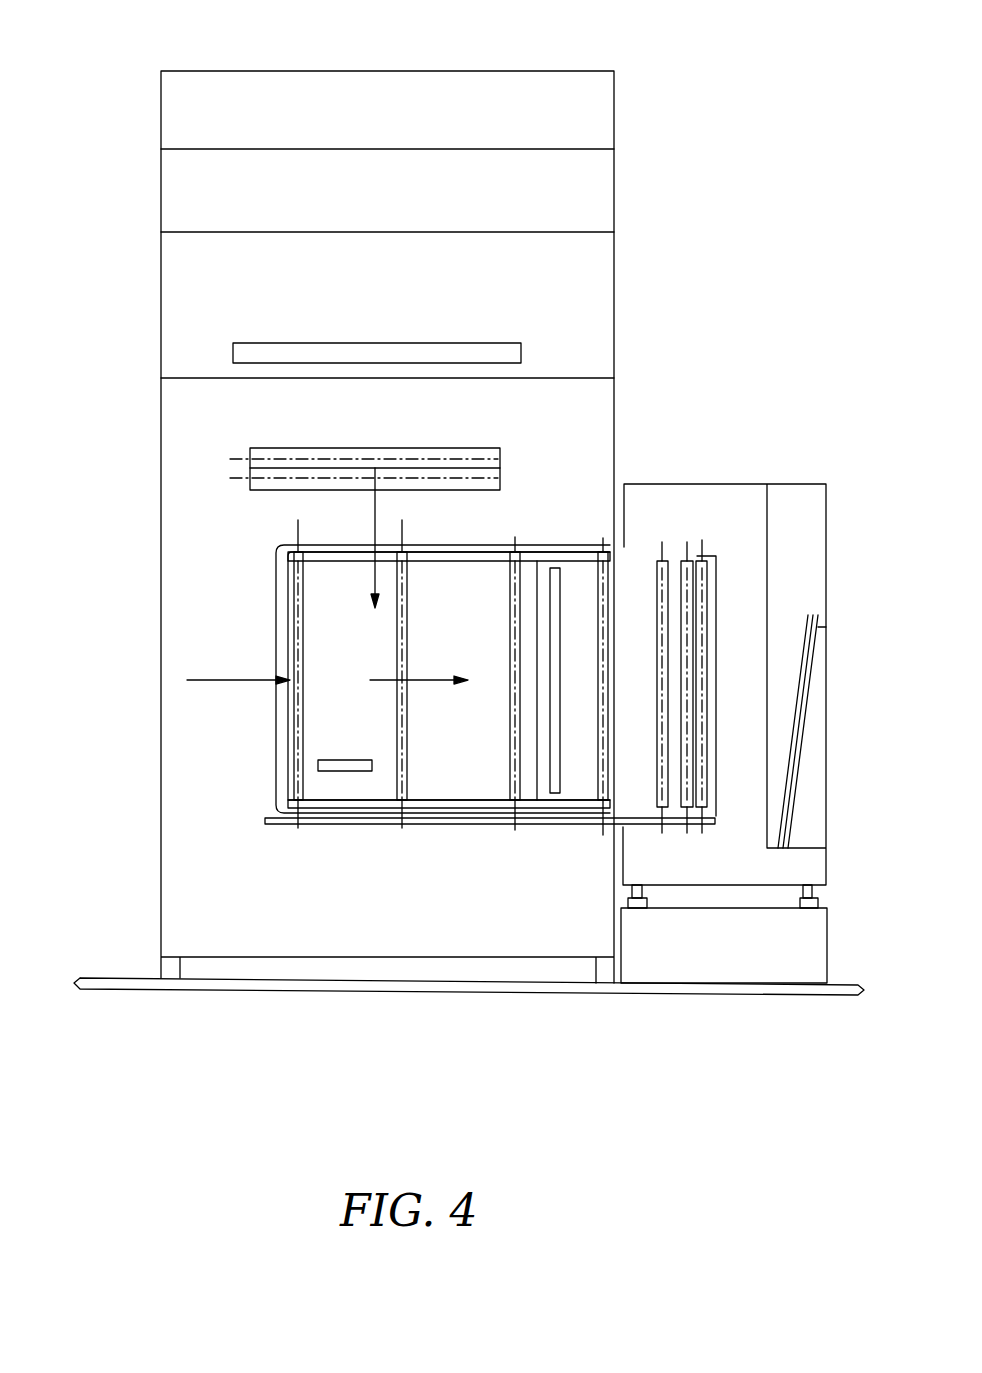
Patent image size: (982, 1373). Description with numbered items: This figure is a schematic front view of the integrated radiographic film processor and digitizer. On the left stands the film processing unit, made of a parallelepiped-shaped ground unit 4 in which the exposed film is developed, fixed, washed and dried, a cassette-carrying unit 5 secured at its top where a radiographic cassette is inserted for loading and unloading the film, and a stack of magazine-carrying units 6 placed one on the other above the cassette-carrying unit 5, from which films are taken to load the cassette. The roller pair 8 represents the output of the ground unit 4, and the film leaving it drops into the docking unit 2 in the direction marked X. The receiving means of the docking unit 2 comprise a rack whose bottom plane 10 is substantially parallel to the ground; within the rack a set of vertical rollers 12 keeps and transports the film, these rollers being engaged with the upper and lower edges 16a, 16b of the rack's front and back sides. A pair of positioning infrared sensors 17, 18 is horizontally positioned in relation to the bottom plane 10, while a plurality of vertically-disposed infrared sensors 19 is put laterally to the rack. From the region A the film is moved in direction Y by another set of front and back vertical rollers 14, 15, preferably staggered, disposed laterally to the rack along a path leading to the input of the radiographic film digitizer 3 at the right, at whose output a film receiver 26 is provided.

The docking unit 2 is at (528, 685).
The radiographic film digitizer 3 is at (740, 495).
The parallelepiped-shaped ground unit 4 is at (190, 528).
The cassette-carrying unit 5 is at (592, 272).
The magazine-carrying units 6 is at (387, 112).
The roller pair 8 is at (253, 487).
The bottom plane 10 is at (267, 823).
The front vertical rollers 12 is at (398, 647).
The front vertical rollers 14 is at (690, 747).
The back vertical rollers 15 is at (703, 813).
The upper edge 16a is at (565, 805).
The lower edge 16b is at (585, 552).
The positioning infrared sensor 17 is at (327, 842).
The positioning infrared sensor 18 is at (333, 768).
The vertically-disposed infrared sensors 19 is at (553, 613).
The film receiver 26 is at (798, 782).
The region A is at (320, 717).
The direction X is at (375, 528).
The direction Y is at (225, 679).